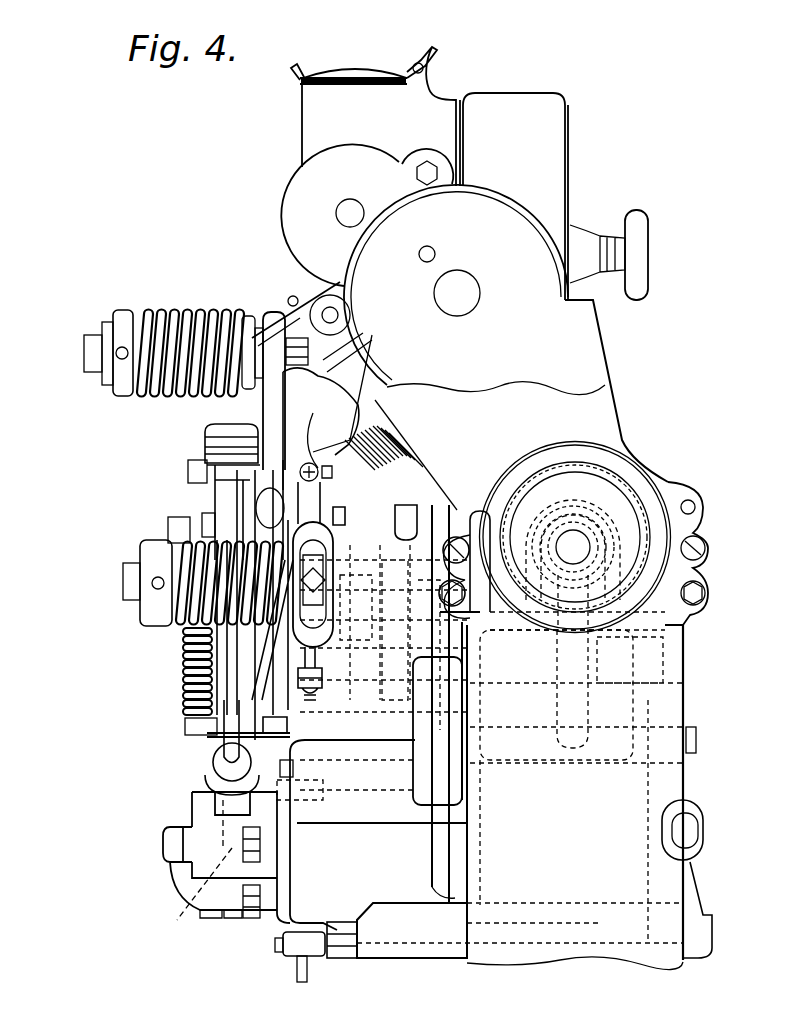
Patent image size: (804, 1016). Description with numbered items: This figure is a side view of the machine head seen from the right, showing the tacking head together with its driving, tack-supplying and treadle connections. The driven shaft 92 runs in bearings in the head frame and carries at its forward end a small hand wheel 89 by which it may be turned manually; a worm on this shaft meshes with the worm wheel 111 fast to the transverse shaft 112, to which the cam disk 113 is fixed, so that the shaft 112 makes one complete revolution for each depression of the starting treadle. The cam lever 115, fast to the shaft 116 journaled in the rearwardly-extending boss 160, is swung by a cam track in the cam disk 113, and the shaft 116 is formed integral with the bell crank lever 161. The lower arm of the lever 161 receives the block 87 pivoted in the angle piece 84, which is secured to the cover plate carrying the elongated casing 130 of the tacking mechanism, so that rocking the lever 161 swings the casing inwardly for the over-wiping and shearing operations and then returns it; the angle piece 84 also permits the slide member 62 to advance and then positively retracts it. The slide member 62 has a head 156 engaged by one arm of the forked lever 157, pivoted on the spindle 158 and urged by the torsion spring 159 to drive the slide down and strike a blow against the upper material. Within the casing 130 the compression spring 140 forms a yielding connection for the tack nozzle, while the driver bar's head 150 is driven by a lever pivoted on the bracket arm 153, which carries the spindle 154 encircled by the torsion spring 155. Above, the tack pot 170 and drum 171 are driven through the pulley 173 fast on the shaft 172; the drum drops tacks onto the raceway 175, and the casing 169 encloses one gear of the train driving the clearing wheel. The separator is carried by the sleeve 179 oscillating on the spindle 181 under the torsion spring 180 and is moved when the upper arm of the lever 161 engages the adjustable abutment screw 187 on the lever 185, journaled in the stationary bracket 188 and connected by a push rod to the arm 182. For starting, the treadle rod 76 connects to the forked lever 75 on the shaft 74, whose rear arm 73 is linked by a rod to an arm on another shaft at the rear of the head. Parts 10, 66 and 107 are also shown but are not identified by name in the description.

The main body casing 10 is at (667, 877).
The slide member 62 is at (218, 813).
The boss 66 is at (183, 858).
The arm 73 is at (693, 903).
The forwardly-extending shaft 74 is at (340, 943).
The forked lever 75 is at (317, 957).
The treadle rod 76 is at (297, 970).
The angle piece 84 is at (190, 874).
The block 87 is at (214, 768).
The hand wheel 89 is at (640, 572).
The driven shaft 92 is at (573, 547).
The body block 107 is at (440, 853).
The worm wheel 111 is at (640, 705).
The transverse shaft 112 is at (683, 655).
The cam disk 113 is at (413, 572).
The cam lever 115 is at (462, 785).
The shaft 116 is at (346, 790).
The elongated casing 130 is at (223, 498).
The compression spring 140 is at (183, 667).
The head 150 is at (213, 435).
The bracket arm 153 is at (268, 412).
The spindle 154 is at (84, 355).
The torsion spring 155 is at (165, 308).
The head 156 is at (230, 784).
The forked lever 157 is at (224, 742).
The spindle 158 is at (123, 577).
The torsion spring 159 is at (178, 627).
The rearwardly-extending boss 160 is at (393, 742).
The bell crank lever 161 is at (263, 723).
The casing 169 is at (292, 191).
The tack pot 170 is at (302, 126).
The drum 171 is at (550, 100).
The shaft 172 is at (466, 291).
The pulley 173 is at (530, 235).
The raceway 175 is at (297, 300).
The sleeve 179 is at (343, 388).
The torsion spring 180 is at (322, 492).
The spindle 181 is at (397, 516).
The arm 182 is at (338, 473).
The vertically-disposed lever 185 is at (328, 667).
The adjustable abutment screw 187 is at (310, 692).
The stationary bracket 188 is at (318, 597).